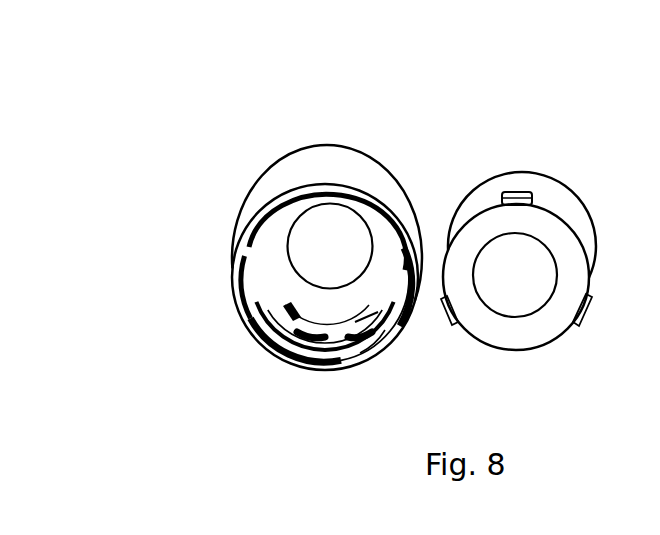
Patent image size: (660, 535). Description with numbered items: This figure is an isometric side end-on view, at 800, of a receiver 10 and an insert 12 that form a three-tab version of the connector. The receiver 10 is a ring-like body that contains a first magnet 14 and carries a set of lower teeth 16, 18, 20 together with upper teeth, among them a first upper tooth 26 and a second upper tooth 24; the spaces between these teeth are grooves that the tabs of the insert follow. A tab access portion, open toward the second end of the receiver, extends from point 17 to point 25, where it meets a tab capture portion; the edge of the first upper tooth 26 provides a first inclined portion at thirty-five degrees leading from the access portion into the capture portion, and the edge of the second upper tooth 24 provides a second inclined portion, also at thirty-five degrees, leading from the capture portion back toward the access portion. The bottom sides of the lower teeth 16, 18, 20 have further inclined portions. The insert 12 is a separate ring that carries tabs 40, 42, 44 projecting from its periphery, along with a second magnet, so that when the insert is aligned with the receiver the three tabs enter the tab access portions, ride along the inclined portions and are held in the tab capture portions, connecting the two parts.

The isometric side end on view of receiver and insert 800 is at (195, 124).
The receiver 10 is at (253, 188).
The insert 12 is at (482, 200).
The first magnet 14 is at (320, 228).
The lower tooth 16 is at (241, 310).
The tab access portion start point 17 is at (330, 346).
The lower tooth 18 is at (355, 355).
The lower tooth 20 is at (363, 198).
The second upper tooth 24 is at (292, 307).
The tab access portion end point 25 is at (308, 324).
The first upper tooth 26 is at (354, 318).
The tab 40 is at (455, 323).
The tab 42 is at (583, 321).
The tab 44 is at (520, 193).